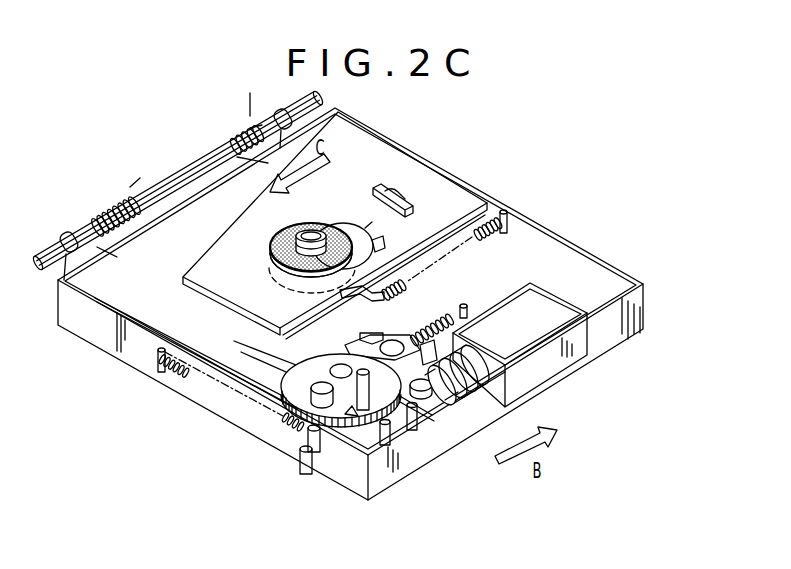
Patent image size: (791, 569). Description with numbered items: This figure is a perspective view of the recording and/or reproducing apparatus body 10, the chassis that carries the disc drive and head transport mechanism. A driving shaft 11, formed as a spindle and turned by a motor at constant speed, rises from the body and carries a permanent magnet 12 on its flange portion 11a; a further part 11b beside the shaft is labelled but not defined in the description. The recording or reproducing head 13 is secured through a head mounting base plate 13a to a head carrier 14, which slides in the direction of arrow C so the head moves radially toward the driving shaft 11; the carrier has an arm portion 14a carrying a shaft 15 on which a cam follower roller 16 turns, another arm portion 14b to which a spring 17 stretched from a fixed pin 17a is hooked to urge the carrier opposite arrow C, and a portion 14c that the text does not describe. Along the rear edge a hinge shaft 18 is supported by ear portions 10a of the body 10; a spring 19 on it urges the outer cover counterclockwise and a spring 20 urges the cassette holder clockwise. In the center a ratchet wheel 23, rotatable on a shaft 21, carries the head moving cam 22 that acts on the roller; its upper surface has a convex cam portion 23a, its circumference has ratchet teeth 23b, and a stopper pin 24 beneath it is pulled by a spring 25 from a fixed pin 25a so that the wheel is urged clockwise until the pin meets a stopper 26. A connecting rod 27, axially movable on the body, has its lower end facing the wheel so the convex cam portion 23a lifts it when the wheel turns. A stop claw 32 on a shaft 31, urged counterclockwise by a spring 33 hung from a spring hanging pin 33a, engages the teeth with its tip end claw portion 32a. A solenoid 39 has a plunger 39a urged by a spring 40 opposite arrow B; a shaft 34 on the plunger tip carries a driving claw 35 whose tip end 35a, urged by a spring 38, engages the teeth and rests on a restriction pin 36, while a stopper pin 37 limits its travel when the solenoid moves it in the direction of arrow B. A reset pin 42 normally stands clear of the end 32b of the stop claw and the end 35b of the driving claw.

The recording and/or reproducing apparatus body 10 is at (577, 250).
The ear portions 10a is at (63, 232).
The driving shaft 11 is at (283, 227).
The flange portion 11a is at (374, 244).
The ring portion 11b is at (317, 218).
The permanent magnet 12 is at (273, 253).
The recording or reproducing head 13 is at (388, 183).
The head mounting base plate 13a is at (407, 197).
The head carrier 14 is at (457, 197).
The arm portion 14a is at (247, 392).
The arm portion 14b is at (317, 308).
The recess 14c is at (363, 227).
The shaft 15 is at (280, 365).
The cam follower roller 16 is at (313, 417).
The spring 17 is at (510, 233).
The fixed pin 17a is at (503, 200).
The hinge shaft 18 is at (173, 170).
The spring 19 is at (108, 203).
The spring 20 is at (233, 132).
The shaft 21 is at (300, 345).
The head moving cam 22 is at (377, 340).
The ratchet wheel 23 is at (283, 447).
The convex cam portion 23a is at (347, 430).
The ratchet teeth 23b is at (357, 480).
The stopper pin 24 is at (293, 467).
The spring 25 is at (178, 370).
The fixed pin 25a is at (157, 360).
The stopper 26 is at (300, 473).
The connecting rod 27 is at (313, 467).
The shaft 31 is at (410, 300).
The stop claw 32 is at (395, 341).
The tip end claw portion 32a is at (300, 317).
The end 32b is at (420, 345).
The spring 33 is at (450, 312).
The spring hanging pin 33a is at (467, 305).
The shaft 34 is at (457, 427).
The driving claw 35 is at (430, 407).
The tip end 35a is at (407, 407).
The end 35b is at (473, 336).
The restriction pin 36 is at (377, 437).
The stopper pin 37 is at (420, 413).
The spring 38 is at (470, 393).
The solenoid 39 is at (577, 370).
The plunger 39a is at (470, 407).
The spring 40 is at (503, 378).
The reset pin 42 is at (503, 307).